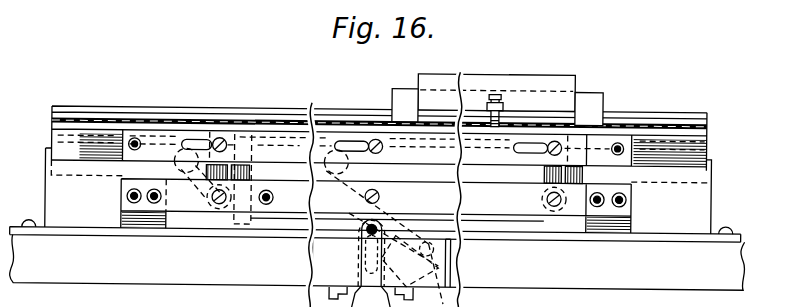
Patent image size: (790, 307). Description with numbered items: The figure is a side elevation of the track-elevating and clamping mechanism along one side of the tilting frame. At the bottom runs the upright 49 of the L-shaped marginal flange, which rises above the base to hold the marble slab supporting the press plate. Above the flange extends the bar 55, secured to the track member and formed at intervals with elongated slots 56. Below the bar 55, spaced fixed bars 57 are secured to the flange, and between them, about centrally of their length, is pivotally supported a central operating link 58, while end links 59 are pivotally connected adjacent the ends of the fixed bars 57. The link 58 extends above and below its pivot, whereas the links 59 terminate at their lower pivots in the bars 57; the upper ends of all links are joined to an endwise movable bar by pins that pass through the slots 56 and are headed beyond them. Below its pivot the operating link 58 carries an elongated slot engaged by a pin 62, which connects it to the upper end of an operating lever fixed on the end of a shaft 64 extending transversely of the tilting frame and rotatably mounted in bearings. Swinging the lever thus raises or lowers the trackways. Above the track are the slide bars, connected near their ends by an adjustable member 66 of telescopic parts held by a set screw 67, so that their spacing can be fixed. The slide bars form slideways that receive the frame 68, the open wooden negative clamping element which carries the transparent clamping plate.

The upright of the L-shaped marginal flange 49 is at (46, 188).
The bar 55 is at (277, 140).
The elongated slot 56 is at (197, 138).
The fixed bar 57 is at (192, 204).
The central operating link 58 is at (370, 176).
The end link 59 is at (227, 164).
The pin 62 is at (373, 228).
The shaft 64 is at (440, 268).
The adjustable member 66 is at (479, 106).
The set screw 67 is at (501, 93).
The frame 68 is at (445, 76).